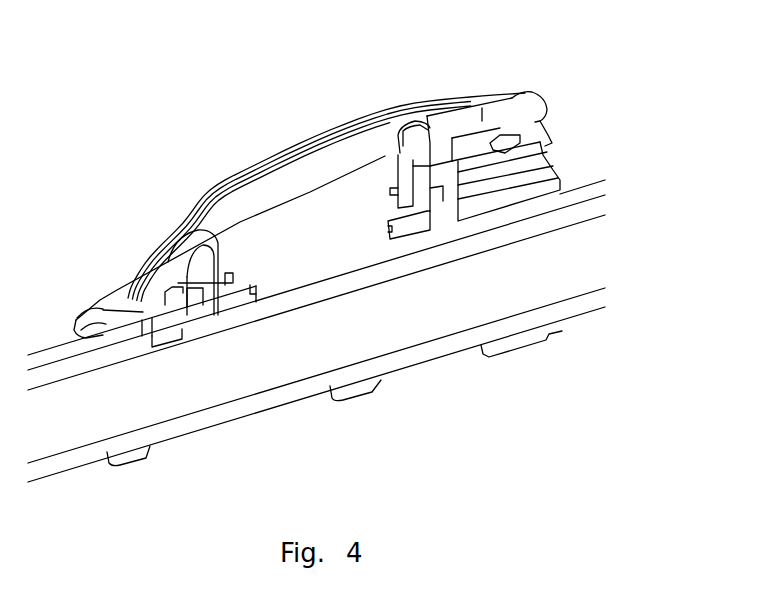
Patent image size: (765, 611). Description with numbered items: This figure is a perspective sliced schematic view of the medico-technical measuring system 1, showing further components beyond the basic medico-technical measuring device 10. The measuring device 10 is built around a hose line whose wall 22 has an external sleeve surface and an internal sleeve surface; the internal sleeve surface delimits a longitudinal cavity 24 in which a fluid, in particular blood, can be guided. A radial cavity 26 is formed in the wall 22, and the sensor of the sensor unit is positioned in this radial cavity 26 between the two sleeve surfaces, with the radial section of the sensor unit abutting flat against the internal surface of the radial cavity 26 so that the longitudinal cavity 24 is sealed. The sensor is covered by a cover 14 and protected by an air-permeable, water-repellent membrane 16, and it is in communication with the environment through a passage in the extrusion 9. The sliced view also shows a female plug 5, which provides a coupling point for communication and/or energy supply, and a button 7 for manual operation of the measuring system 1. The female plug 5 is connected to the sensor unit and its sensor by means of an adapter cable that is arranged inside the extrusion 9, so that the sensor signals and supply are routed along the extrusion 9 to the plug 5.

The medico-technical measuring system 1 is at (327, 84).
The female plug 5 is at (504, 136).
The button 7 is at (535, 85).
The extrusion 9 is at (253, 168).
The medico-technical measuring device 10 is at (192, 265).
The cover 14 is at (142, 311).
The membrane 16 is at (219, 262).
The wall 22 is at (222, 415).
The longitudinal cavity 24 is at (568, 287).
The radial cavity 26 is at (173, 348).